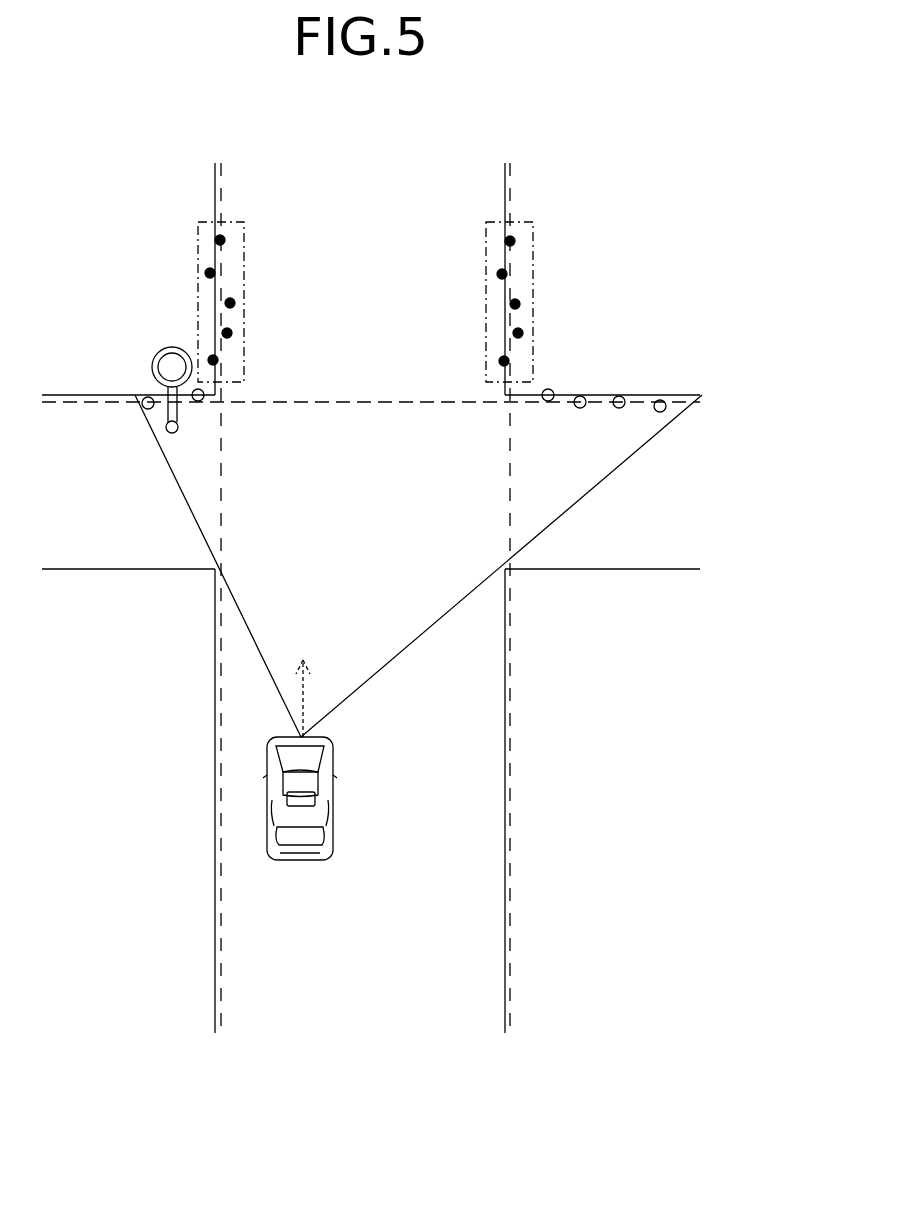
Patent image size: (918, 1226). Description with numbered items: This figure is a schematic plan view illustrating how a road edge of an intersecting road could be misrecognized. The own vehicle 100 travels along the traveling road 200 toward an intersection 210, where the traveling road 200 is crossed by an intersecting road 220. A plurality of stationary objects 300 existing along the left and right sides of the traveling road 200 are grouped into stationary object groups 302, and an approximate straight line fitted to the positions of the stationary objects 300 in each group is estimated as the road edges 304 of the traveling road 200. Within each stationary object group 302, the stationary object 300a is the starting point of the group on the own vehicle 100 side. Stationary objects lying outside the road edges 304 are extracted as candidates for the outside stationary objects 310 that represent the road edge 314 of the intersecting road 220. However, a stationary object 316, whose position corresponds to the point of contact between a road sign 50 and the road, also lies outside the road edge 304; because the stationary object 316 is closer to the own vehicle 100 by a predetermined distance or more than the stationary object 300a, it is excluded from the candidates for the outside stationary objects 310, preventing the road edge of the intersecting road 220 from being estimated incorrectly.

The road sign 50 is at (173, 347).
The own vehicle 100 is at (300, 862).
The traveling road 200 is at (388, 188).
The intersection 210 is at (342, 497).
The intersecting road 220 is at (86, 546).
The stationary objects 300 is at (226, 241).
The stationary object (starting point of group) 300a is at (219, 361).
The stationary object group 302 is at (197, 248).
The road edges 304 is at (224, 192).
The outside stationary objects 310 is at (144, 398).
The road edge of intersecting road 314 is at (392, 405).
The stationary object (excluded) 316 is at (174, 434).